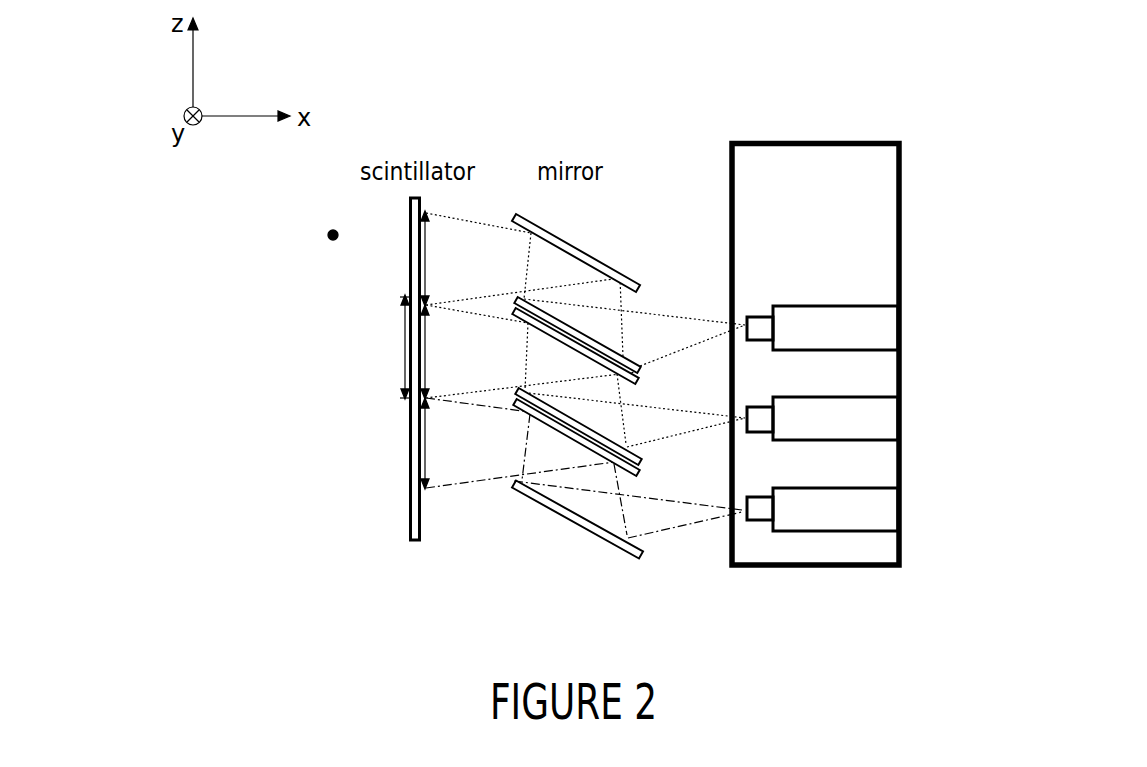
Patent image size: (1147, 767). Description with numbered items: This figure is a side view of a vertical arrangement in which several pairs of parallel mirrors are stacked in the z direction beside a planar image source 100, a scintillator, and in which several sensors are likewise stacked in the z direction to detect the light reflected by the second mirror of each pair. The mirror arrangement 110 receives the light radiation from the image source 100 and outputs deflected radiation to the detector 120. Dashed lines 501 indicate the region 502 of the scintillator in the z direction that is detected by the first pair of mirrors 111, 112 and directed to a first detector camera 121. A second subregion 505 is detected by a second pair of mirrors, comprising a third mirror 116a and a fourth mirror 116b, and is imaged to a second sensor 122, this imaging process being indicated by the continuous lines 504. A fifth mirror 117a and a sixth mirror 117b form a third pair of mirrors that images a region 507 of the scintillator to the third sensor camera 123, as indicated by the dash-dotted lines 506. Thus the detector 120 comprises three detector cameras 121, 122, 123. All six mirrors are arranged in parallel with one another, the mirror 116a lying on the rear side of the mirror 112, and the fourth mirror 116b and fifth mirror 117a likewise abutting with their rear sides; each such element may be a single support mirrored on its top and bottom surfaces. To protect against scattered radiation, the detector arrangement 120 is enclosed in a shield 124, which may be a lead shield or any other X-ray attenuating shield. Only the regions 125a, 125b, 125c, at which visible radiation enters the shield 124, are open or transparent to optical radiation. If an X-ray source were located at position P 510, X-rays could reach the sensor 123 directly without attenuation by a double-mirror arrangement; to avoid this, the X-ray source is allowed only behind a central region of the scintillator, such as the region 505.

The planar image source 100 is at (409, 272).
The mirror arrangement 110 is at (600, 90).
The first mirror 111 is at (638, 288).
The second mirror 112 is at (641, 370).
The third mirror 116a is at (556, 340).
The fourth mirror 116b is at (642, 462).
The fifth mirror 117a is at (532, 425).
The sixth mirror 117b is at (572, 524).
The detector 120 is at (763, 56).
The first detector camera 121 is at (890, 325).
The second sensor 122 is at (890, 415).
The third sensor camera 123 is at (890, 508).
The shield 124 is at (873, 143).
The open region 125a is at (741, 324).
The open region 125b is at (741, 417).
The open region 125c is at (736, 520).
The dashed lines 501 is at (458, 220).
The region of the scintillator 502 is at (443, 258).
The continuous lines 504 is at (484, 279).
The second subregion 505 is at (386, 347).
The dash-dotted lines 506 is at (472, 402).
The region of the scintillator 507 is at (421, 446).
The position P 510 is at (328, 236).